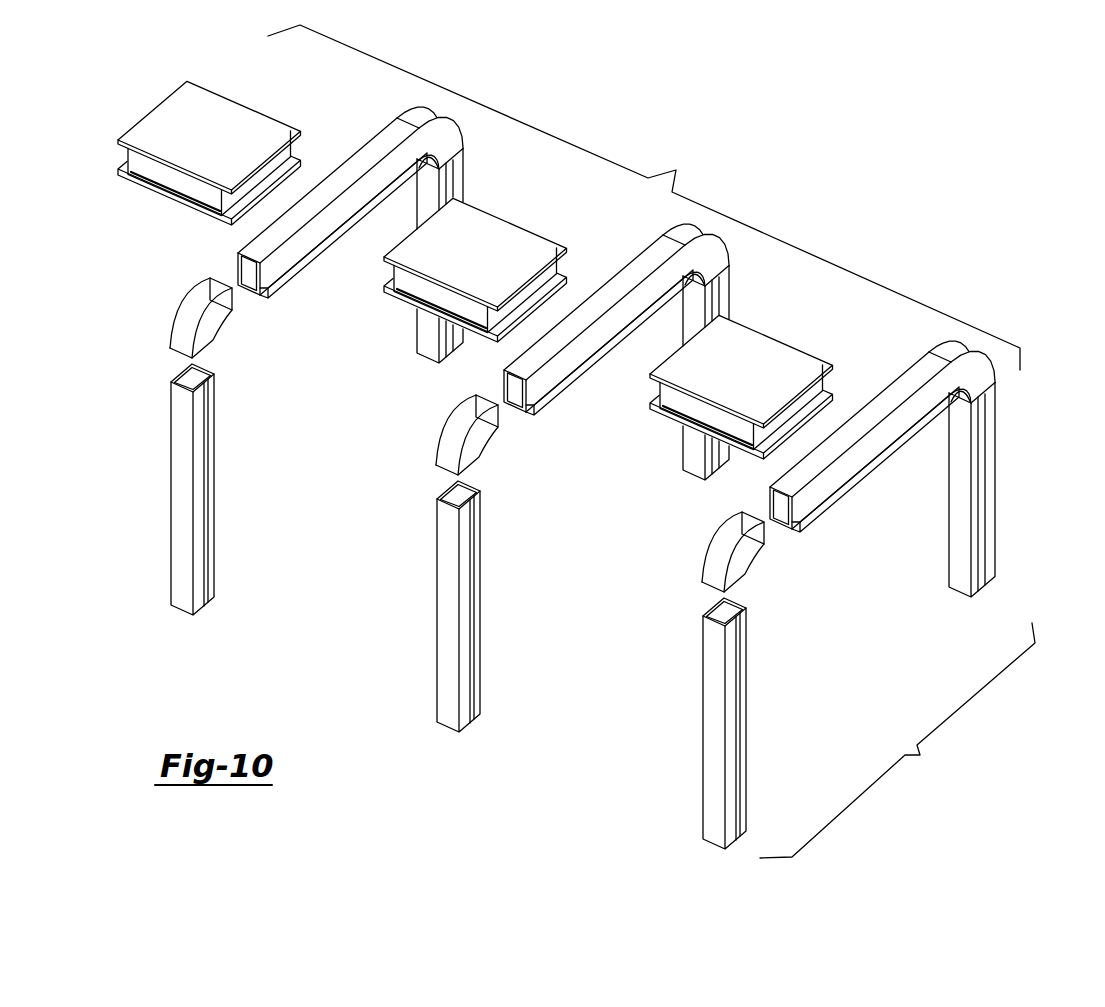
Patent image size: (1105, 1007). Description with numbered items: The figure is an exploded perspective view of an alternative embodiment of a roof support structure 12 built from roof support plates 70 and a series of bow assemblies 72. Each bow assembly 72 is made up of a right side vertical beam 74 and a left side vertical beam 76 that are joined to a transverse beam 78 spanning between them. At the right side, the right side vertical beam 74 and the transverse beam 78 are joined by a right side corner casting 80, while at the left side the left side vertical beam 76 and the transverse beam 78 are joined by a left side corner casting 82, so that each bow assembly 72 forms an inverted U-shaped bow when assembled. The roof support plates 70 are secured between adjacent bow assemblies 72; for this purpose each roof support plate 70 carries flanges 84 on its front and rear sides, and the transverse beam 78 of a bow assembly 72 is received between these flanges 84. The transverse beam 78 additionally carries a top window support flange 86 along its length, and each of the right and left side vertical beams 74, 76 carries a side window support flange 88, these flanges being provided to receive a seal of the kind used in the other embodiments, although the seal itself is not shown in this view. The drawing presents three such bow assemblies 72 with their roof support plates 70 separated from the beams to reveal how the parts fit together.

The frame assembly 12 is at (644, 197).
The roof support plate 70 is at (227, 123).
The bow assembly 72 is at (897, 740).
The right side vertical beam 74 is at (995, 482).
The left side vertical beam 76 is at (715, 742).
The transverse beam 78 is at (863, 473).
The right side corner casting 80 is at (995, 366).
The left side corner casting 82 is at (716, 550).
The flanges 84 is at (232, 206).
The top window support flange 86 is at (543, 385).
The side window support flange 88 is at (988, 532).